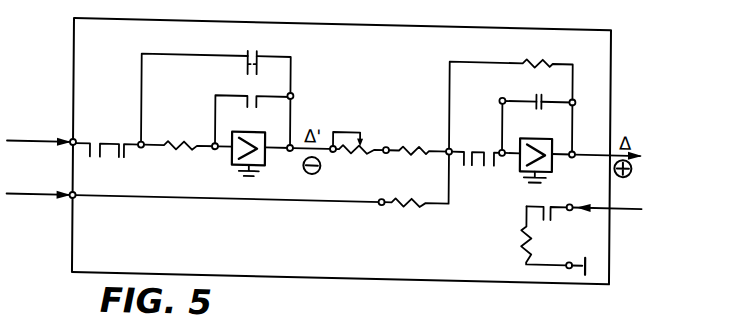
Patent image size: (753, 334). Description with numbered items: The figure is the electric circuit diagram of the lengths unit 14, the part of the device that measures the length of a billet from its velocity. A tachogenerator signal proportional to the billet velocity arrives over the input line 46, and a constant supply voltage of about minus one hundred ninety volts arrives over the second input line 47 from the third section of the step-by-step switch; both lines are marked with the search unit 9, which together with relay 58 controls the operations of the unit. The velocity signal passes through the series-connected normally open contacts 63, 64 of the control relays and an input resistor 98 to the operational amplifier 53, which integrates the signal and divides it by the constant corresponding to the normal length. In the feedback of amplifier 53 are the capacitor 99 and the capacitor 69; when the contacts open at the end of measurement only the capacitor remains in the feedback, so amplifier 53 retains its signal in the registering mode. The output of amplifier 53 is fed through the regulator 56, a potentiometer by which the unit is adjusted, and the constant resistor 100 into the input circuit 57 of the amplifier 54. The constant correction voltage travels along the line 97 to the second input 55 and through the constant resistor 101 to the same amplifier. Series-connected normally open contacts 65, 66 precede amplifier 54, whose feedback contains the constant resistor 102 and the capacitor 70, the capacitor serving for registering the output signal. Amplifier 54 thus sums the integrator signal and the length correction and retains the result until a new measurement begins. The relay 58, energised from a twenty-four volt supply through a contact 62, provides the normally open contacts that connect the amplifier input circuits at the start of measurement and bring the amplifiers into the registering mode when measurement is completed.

The lengths unit 14 is at (503, 265).
The signal input line 46 is at (38, 139).
The third section of the step-by-step switch 47 is at (35, 194).
The search unit 9 is at (61, 180).
The normally open contact 63 is at (97, 137).
The normally open contact 64 is at (126, 138).
The resistor 98 is at (181, 133).
The capacitor 99 is at (216, 87).
The capacitor 69 is at (251, 91).
The operational amplifier 53 is at (262, 128).
The regulator (potentiometer) 56 is at (339, 154).
The input circuit of amplifier 54 57 is at (388, 140).
The constant resistor 100 is at (420, 139).
The supply line 97 is at (229, 184).
The input of amplifier 54 55 is at (382, 191).
The constant resistor 101 is at (417, 180).
The normally open contact 65 is at (468, 146).
The normally open contact 66 is at (494, 172).
The amplifier 54 is at (538, 128).
The capacitor 70 is at (537, 113).
The constant resistor 102 is at (511, 95).
The relay contact 62 is at (590, 207).
The relay 58 is at (536, 240).